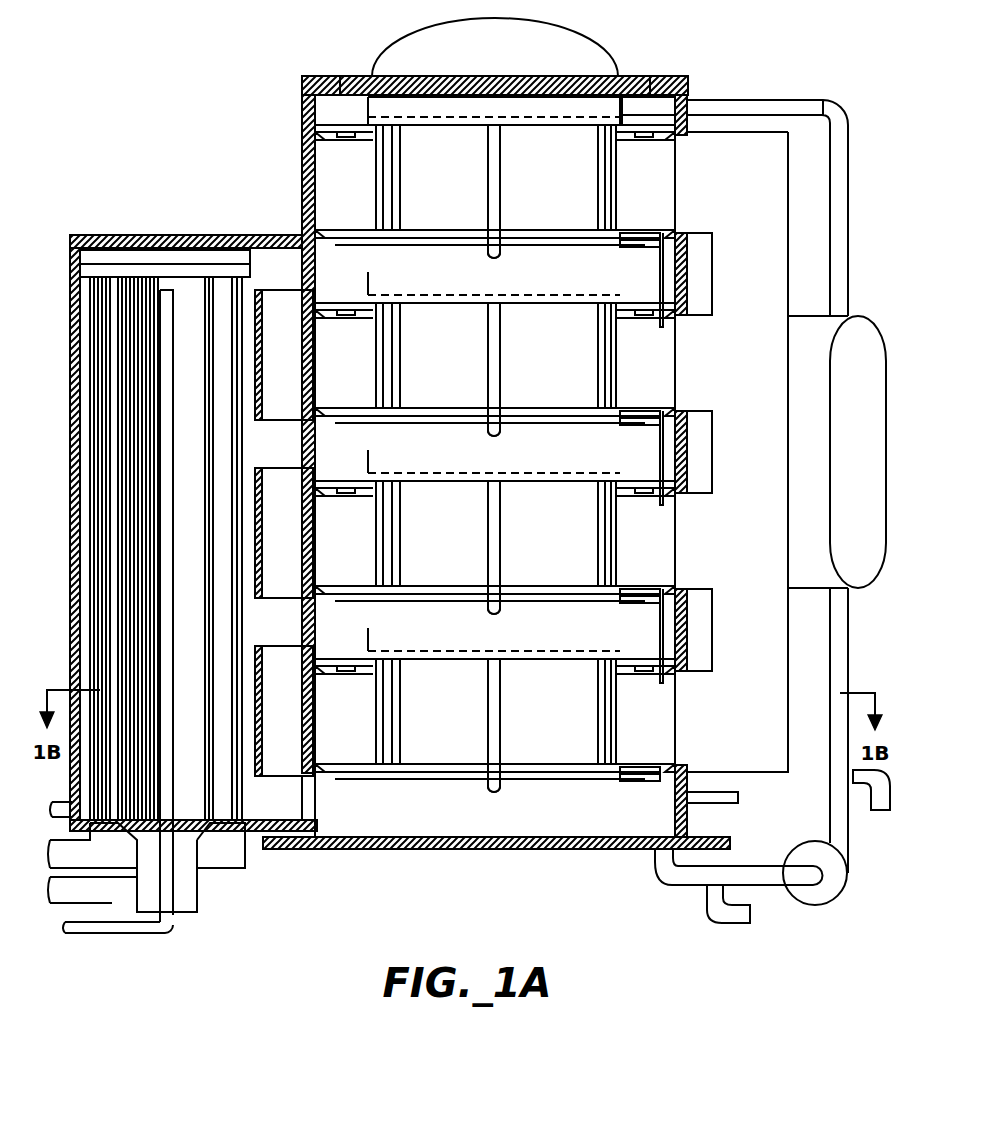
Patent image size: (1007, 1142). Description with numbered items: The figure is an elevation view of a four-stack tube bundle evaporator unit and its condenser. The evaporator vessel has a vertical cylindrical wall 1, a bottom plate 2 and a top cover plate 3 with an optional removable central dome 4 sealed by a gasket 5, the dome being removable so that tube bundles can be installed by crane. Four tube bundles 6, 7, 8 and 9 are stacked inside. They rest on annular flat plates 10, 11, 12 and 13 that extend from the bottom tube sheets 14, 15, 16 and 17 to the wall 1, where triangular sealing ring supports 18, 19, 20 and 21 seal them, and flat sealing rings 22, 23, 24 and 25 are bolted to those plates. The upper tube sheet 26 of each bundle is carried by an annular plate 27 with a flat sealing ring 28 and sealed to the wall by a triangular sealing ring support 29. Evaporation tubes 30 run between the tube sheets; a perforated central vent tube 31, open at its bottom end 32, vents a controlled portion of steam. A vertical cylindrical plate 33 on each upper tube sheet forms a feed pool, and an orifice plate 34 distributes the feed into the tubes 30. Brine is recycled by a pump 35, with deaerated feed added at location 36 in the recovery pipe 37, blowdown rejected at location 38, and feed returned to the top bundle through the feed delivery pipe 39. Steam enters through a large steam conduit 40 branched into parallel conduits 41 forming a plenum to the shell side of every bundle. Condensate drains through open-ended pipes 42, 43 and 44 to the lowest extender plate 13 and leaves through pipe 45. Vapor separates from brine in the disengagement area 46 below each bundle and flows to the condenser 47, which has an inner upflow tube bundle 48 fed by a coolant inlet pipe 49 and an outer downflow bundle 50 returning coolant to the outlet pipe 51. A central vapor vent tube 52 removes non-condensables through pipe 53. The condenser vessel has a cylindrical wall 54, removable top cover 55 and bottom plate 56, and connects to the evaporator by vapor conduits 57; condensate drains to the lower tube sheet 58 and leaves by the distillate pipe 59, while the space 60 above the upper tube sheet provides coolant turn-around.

The vertical cylindrical shell or wall 1 is at (301, 180).
The base or floor or bottom plate 2 is at (342, 848).
The top cover plate 3 is at (296, 78).
The removable central dome 4 is at (564, 29).
The gasket 5 is at (660, 84).
The evaporator tube bundle 6 is at (496, 177).
The evaporator tube bundle 7 is at (496, 355).
The evaporator tube bundle 8 is at (496, 533).
The evaporator tube bundle 9 is at (496, 711).
The annular flat plate 10 is at (325, 228).
The annular flat plate 11 is at (325, 406).
The annular flat plate 12 is at (325, 584).
The annular flat plate 13 is at (325, 762).
The lower or bottom tube sheet 14 is at (427, 228).
The lower or bottom tube sheet 15 is at (427, 406).
The lower or bottom tube sheet 16 is at (427, 584).
The lower or bottom tube sheet 17 is at (427, 762).
The sealing ring support 18 is at (322, 247).
The sealing ring support 19 is at (322, 425).
The sealing ring support 20 is at (322, 603).
The sealing ring support 21 is at (322, 781).
The flat sealing ring 22 is at (640, 246).
The flat sealing ring 23 is at (640, 424).
The flat sealing ring 24 is at (640, 602).
The flat sealing ring 25 is at (640, 780).
The upper or top tube sheet 26 is at (482, 130).
The annular plate 27 is at (324, 119).
The flat sealing ring 28 is at (352, 151).
The triangular sealing ring support 29 is at (313, 144).
The evaporation tubes 30 is at (414, 163).
The vent tube 31 is at (502, 190).
The bottom end 32 is at (497, 253).
The vertical cylindrical plate 33 is at (370, 101).
The orifice plate 34 is at (530, 116).
The pump 35 is at (810, 906).
The location 36 is at (749, 917).
The recycled feed recovery pipe 37 is at (653, 878).
The location 38 is at (888, 808).
The feed delivery pipe 39 is at (851, 110).
The steam conduit 40 is at (858, 452).
The parallel conduits 41 is at (731, 466).
The open-ended pipe 42 is at (662, 335).
The open-ended pipe 43 is at (662, 513).
The open-ended pipe 44 is at (662, 691).
The pipe 45 is at (730, 800).
The disengagement area 46 is at (487, 525).
The condenser 47 is at (78, 360).
The inner tube bundle 48 is at (58, 468).
The coolant inlet pipe 49 is at (110, 892).
The outer or annular tube bundle 50 is at (235, 262).
The outlet pipe 51 is at (69, 872).
The vapor vent tube 52 is at (173, 778).
The pipe 53 is at (143, 926).
The cylindrical wall 54 is at (64, 247).
The top cover 55 is at (121, 234).
The base or bottom plate 56 is at (255, 829).
The connecting vapor ducts or conduits 57 is at (276, 534).
The lower tube sheet 58 is at (212, 802).
The distillate pipe 59 is at (66, 803).
The space or area 60 is at (175, 261).